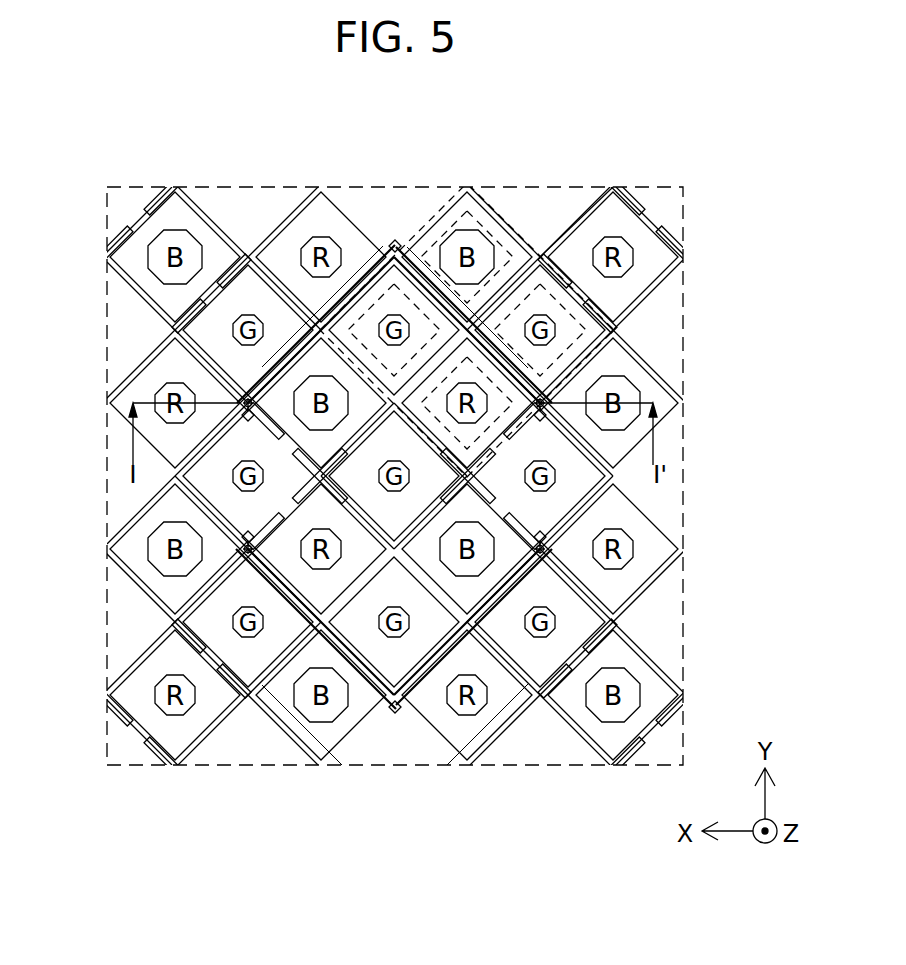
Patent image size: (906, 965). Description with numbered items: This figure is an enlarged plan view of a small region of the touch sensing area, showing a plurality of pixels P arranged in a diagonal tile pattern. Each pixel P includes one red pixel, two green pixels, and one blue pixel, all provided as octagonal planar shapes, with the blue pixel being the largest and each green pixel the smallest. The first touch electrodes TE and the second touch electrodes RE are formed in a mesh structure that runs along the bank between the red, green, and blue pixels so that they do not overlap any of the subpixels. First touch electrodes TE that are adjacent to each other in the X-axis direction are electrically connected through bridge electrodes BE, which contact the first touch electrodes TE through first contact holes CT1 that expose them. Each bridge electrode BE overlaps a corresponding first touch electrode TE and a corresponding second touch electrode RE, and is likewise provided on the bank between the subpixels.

The bridge electrode BE is at (395, 240).
The pixel P is at (468, 192).
The second touch electrode RE is at (585, 215).
The first contact hole CT1 is at (243, 399).
The first touch electrode TE is at (128, 575).